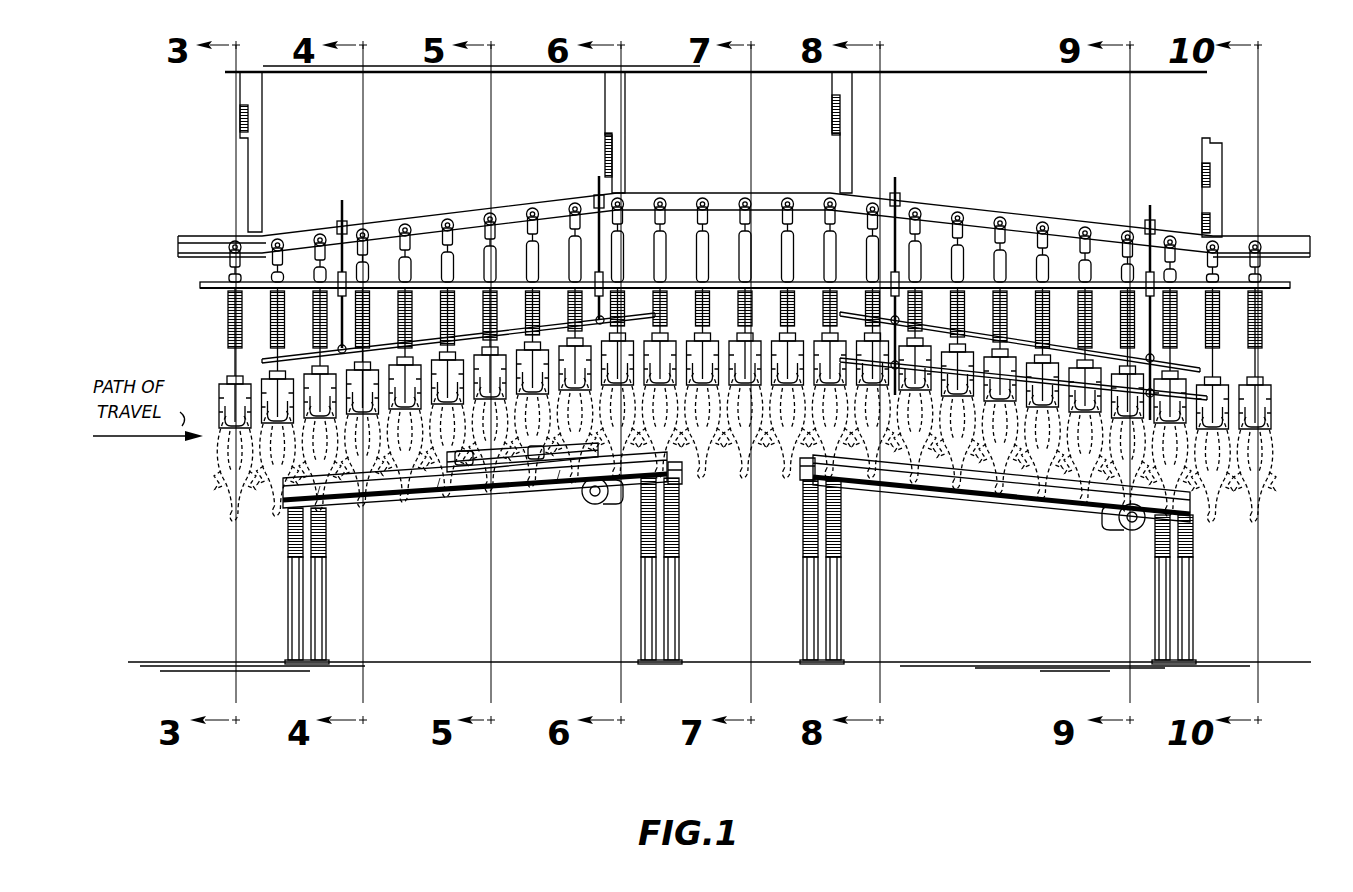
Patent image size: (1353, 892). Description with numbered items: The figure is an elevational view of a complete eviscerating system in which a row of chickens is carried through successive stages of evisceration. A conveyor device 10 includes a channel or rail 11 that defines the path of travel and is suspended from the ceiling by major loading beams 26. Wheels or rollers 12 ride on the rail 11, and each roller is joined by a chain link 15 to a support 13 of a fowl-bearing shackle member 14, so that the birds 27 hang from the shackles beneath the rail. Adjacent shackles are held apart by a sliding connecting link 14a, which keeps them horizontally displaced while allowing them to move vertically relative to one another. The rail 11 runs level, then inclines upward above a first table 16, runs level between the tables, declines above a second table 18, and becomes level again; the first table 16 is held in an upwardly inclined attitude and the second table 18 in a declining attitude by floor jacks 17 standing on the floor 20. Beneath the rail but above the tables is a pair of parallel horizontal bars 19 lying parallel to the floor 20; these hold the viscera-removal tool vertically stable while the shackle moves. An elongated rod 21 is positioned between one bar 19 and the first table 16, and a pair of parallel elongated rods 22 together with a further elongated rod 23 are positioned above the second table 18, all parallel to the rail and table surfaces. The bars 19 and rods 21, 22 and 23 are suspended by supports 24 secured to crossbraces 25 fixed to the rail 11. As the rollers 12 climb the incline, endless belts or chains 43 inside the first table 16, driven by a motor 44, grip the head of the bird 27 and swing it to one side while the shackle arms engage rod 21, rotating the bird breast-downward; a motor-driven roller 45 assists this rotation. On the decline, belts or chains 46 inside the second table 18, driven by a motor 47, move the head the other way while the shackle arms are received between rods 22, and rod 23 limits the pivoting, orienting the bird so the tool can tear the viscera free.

The conveyor device 10 is at (434, 211).
The channel or rail 11 is at (519, 207).
The wheels or rollers 12 is at (237, 246).
The support 13 is at (230, 277).
The shackle member 14 is at (222, 375).
The connecting link 14a is at (262, 352).
The chain link 15 is at (277, 260).
The first table 16 is at (470, 493).
The floor jacks 17 is at (300, 607).
The second table 18 is at (992, 490).
The horizontal bars 19 is at (519, 282).
The floor or supporting foundation 20 is at (790, 662).
The elongated rod 21 is at (303, 347).
The elongated rods 22 is at (1105, 352).
The elongated rod 23 is at (967, 363).
The supports 24 is at (350, 275).
The crossbraces 25 is at (338, 223).
The major loading beams 26 is at (256, 170).
The bird 27 is at (250, 493).
The endless belts or chains 43 is at (683, 470).
The motor 44 is at (600, 504).
The motor-driven roller 45 is at (535, 470).
The endless belts or chains 46 is at (803, 478).
The motor 47 is at (1118, 528).